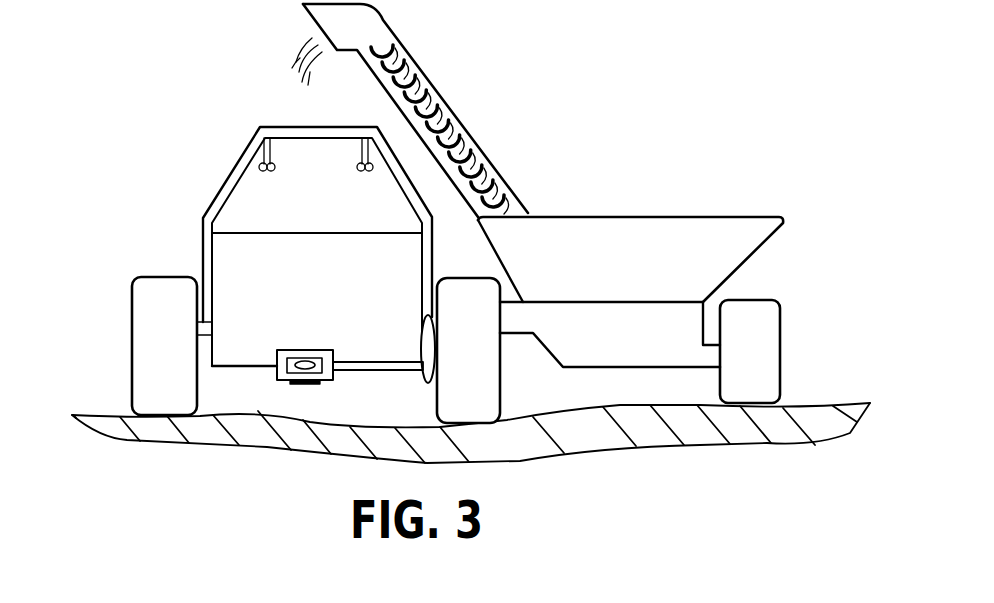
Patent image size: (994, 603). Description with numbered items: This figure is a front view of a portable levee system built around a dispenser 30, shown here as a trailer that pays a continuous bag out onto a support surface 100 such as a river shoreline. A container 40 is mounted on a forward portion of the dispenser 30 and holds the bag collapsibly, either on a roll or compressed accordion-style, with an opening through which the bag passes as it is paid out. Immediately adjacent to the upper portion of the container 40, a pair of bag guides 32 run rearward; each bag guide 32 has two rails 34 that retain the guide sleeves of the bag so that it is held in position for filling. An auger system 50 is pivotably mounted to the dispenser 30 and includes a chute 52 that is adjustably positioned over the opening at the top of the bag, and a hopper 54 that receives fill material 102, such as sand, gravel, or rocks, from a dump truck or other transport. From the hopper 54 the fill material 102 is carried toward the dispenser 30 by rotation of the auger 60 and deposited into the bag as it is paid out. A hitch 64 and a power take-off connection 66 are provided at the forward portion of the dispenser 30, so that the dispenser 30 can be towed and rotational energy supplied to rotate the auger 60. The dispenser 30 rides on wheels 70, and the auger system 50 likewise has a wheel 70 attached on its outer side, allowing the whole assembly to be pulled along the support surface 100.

The dispenser 30 is at (478, 233).
The bag guides 32 is at (262, 150).
The rails 34 is at (358, 175).
The container 40 is at (228, 262).
The auger system 50 is at (636, 313).
The chute 52 is at (370, 28).
The hopper 54 is at (644, 228).
The auger 60 is at (430, 100).
The hitch 64 is at (318, 385).
The power take-off connection 66 is at (305, 357).
The wheels 70 is at (140, 330).
The support surface 100 is at (838, 403).
The fill material 102 is at (290, 50).